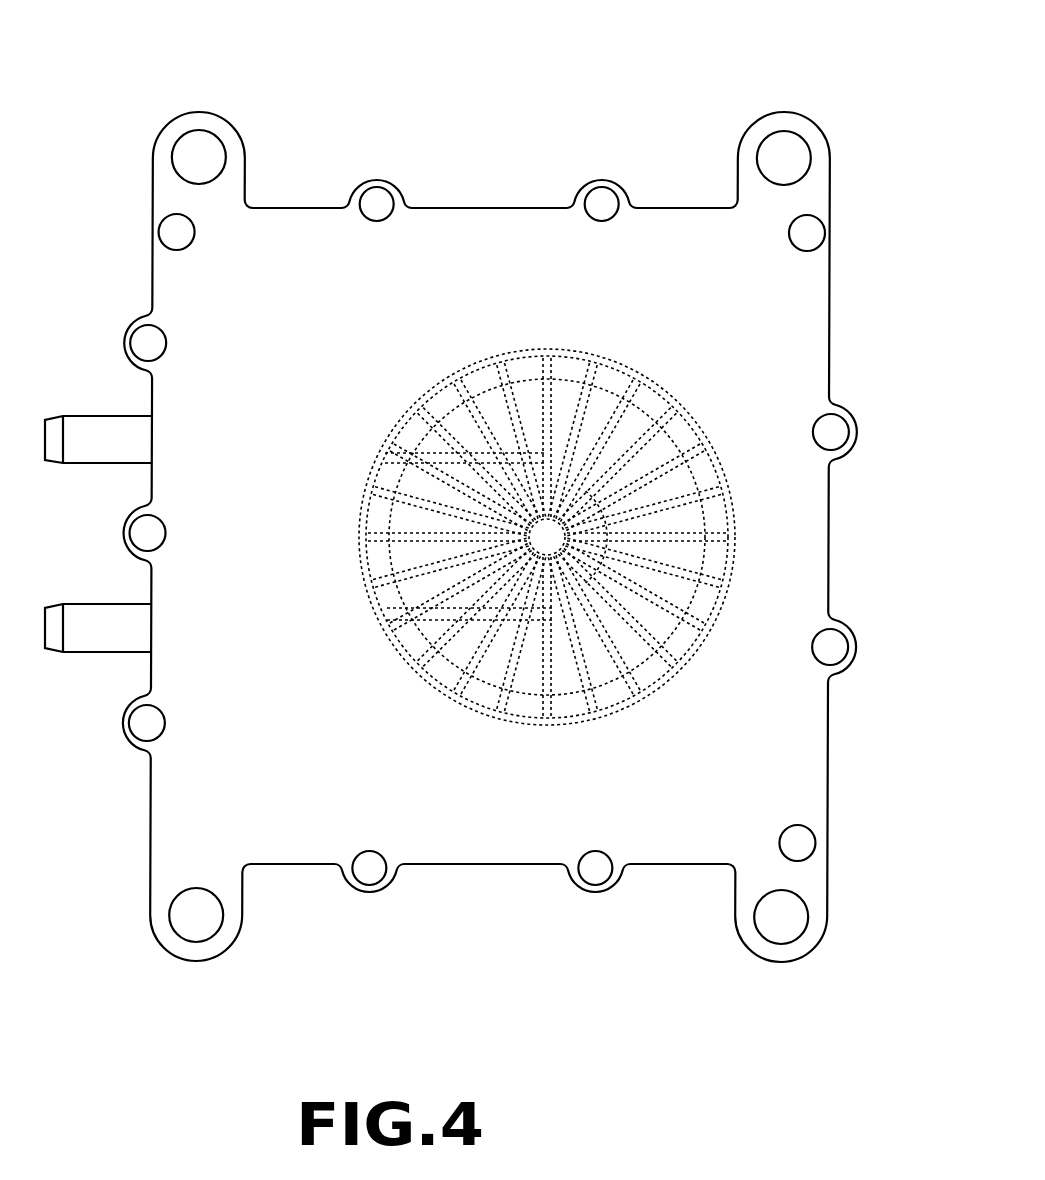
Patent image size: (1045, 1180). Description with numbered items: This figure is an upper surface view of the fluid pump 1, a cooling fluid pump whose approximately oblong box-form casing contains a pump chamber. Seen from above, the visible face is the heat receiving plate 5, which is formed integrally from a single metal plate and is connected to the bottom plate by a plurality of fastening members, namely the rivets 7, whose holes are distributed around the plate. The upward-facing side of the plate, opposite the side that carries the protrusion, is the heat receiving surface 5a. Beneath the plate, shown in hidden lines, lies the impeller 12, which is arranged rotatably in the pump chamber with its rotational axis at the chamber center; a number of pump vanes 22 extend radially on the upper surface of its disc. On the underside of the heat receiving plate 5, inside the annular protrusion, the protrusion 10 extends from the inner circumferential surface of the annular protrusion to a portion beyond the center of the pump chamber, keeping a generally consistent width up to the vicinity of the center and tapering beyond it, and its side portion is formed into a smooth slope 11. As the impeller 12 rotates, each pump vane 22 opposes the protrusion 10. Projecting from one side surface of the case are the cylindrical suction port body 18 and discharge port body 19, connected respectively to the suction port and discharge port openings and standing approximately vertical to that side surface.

The fluid pump 1 is at (520, 145).
The heat receiving plate 5 is at (832, 775).
The heat receiving surface 5a is at (676, 223).
The rivet 7 is at (810, 232).
The protrusion 10 is at (648, 654).
The smooth slope 11 is at (433, 686).
The impeller 12 is at (697, 418).
The suction port body 18 is at (80, 655).
The discharge port body 19 is at (82, 414).
The pump vane 22 is at (730, 522).